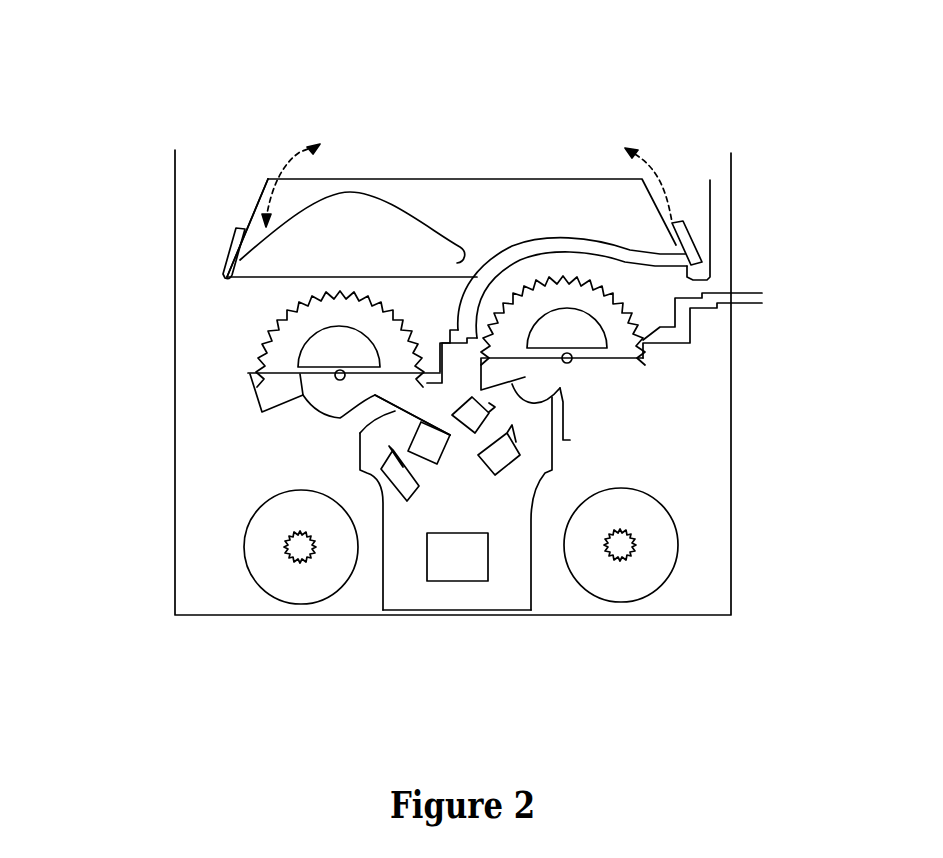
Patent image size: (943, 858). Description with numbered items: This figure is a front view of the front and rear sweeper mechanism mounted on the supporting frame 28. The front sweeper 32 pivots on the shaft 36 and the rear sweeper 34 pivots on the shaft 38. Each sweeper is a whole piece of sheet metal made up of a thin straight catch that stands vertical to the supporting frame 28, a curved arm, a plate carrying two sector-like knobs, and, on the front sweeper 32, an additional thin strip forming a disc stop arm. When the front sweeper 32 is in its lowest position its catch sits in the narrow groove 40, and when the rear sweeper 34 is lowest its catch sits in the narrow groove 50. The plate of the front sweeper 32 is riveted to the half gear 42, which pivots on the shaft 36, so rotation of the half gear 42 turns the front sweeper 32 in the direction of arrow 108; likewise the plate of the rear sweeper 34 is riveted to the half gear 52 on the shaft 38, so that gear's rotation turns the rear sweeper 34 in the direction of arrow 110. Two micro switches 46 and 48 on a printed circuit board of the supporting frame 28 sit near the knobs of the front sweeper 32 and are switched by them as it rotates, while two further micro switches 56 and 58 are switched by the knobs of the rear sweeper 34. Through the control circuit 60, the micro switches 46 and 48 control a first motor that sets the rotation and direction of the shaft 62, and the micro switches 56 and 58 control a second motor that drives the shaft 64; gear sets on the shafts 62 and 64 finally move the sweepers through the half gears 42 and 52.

The supporting frame 28 is at (225, 543).
The front sweeper 32 is at (332, 202).
The rear sweeper 34 is at (553, 230).
The shaft 36 is at (580, 365).
The shaft 38 is at (348, 364).
The narrow groove 40 is at (222, 247).
The half gear 42 is at (588, 288).
The micro switch 46 is at (469, 425).
The micro switch 48 is at (503, 458).
The narrow groove 50 is at (715, 267).
The half gear 52 is at (277, 333).
The micro switch 56 is at (402, 488).
The micro switch 58 is at (422, 430).
The control circuit 60 is at (453, 562).
The shaft 62 is at (621, 562).
The shaft 64 is at (297, 563).
The arrow 108 is at (295, 150).
The arrow 110 is at (686, 188).